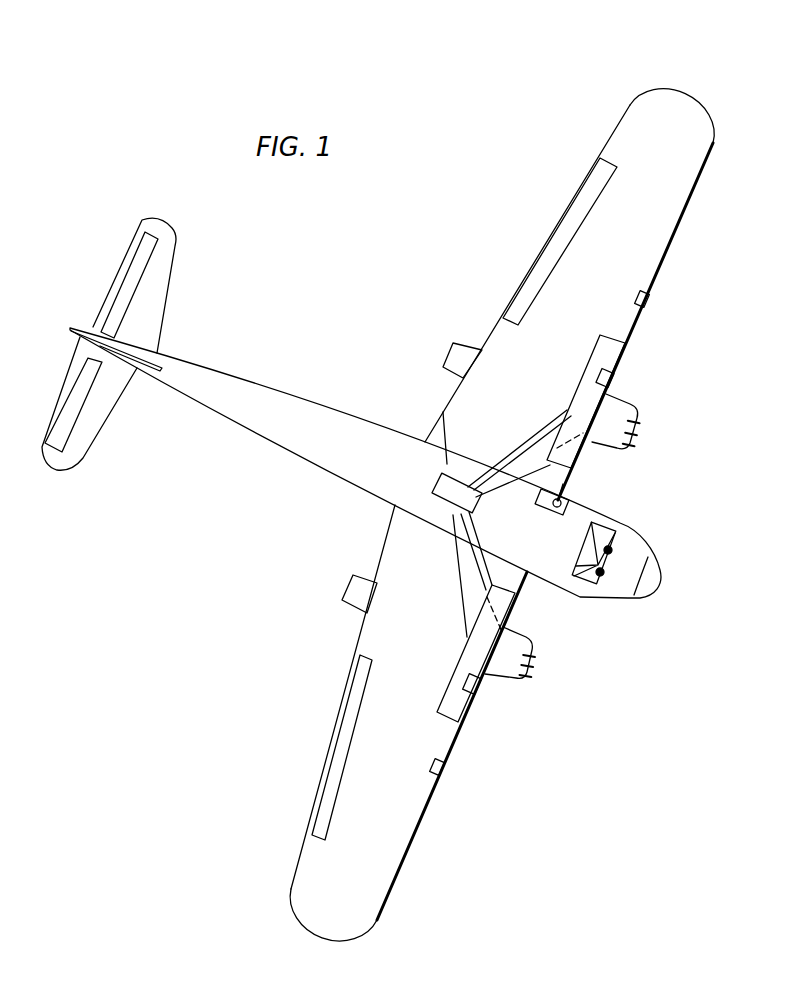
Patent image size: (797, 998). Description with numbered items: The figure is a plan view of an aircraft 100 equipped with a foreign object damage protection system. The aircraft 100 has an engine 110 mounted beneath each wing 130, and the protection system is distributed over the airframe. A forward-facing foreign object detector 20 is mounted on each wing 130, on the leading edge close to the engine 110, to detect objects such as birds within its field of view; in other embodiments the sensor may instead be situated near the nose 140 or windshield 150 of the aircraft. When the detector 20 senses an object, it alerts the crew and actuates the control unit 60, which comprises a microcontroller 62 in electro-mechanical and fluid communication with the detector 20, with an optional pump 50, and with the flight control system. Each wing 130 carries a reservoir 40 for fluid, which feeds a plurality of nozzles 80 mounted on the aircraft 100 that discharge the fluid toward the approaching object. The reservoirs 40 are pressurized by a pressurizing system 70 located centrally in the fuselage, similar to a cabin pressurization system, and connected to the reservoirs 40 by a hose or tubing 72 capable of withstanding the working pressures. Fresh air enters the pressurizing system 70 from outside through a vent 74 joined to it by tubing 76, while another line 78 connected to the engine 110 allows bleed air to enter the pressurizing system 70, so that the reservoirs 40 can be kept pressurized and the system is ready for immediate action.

The aircraft 100 is at (276, 356).
The wing 130 is at (497, 333).
The foreign object detector 20 is at (648, 305).
The reservoir 40 is at (610, 355).
The pump 50 is at (612, 383).
The engine 110 is at (640, 440).
The nozzle 80 is at (535, 670).
The pressurizing system 70 is at (437, 497).
The hose or tubing 72 is at (453, 543).
The vent 74 is at (443, 413).
The tubing 76 is at (437, 456).
The line 78 is at (547, 467).
The control unit 60 is at (563, 483).
The microcontroller 62 is at (573, 510).
The windshield 150 is at (618, 535).
The nose 140 is at (662, 585).